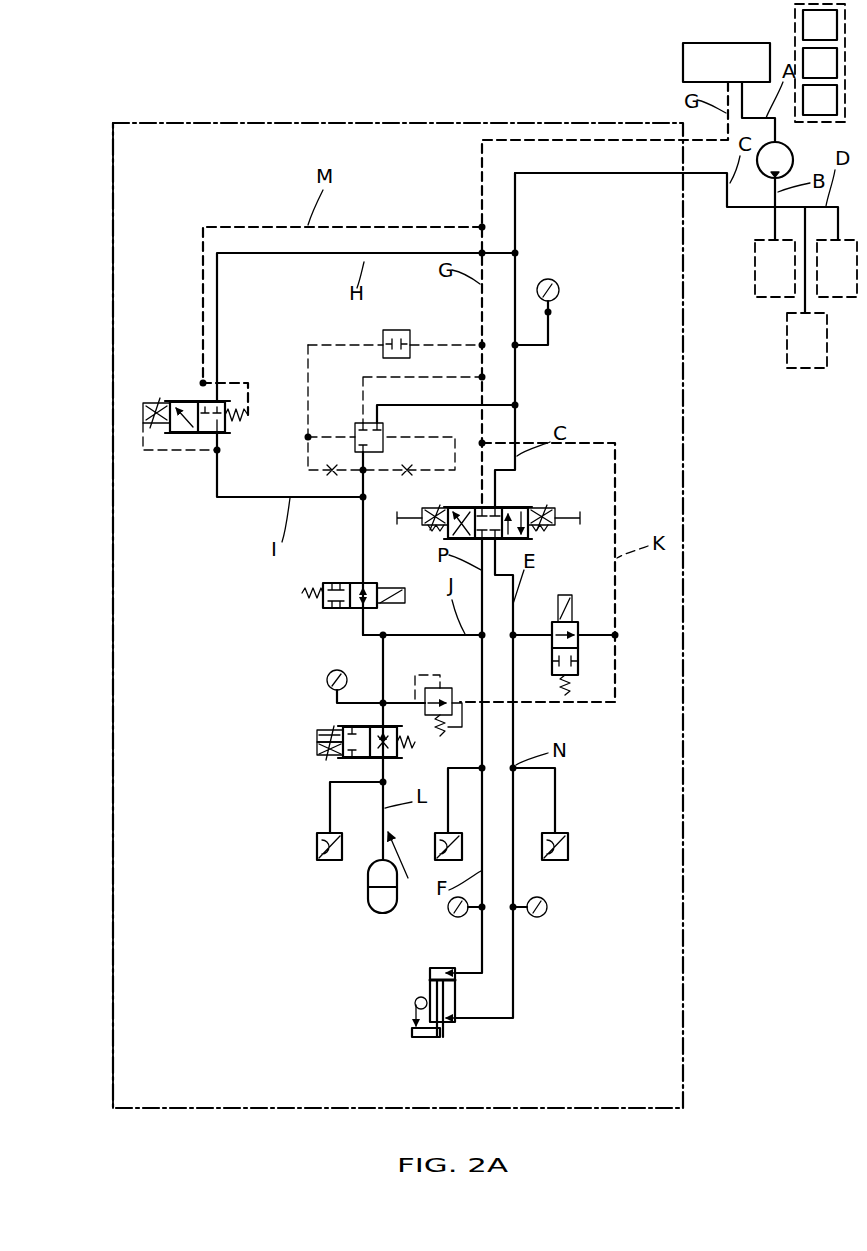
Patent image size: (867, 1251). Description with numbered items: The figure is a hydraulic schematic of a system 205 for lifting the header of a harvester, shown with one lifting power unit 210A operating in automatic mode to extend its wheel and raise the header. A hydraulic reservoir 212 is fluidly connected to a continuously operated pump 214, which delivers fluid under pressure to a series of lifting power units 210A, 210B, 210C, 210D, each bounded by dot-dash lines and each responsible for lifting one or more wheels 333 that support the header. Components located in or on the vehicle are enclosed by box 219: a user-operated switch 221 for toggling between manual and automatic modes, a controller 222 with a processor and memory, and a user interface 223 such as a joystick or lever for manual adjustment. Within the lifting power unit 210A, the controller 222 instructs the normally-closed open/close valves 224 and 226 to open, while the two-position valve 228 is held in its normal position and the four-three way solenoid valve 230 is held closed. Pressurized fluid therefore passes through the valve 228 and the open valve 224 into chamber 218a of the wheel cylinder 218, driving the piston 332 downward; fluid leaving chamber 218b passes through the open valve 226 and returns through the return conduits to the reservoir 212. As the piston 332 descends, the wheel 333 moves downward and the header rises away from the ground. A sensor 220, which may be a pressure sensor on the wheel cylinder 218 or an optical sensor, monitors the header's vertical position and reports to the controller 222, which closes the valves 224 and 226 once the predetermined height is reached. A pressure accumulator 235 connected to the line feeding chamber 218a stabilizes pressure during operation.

The system 205 is at (378, 69).
The lifting power unit 210A is at (113, 187).
The hydraulic reservoir 212 is at (726, 62).
The pump 214 is at (775, 160).
The box 219 is at (795, 36).
The user-operated switch 221 is at (820, 25).
The controller 222 is at (820, 63).
The user interface 223 is at (820, 100).
The lifting power unit 210B is at (775, 268).
The lifting power unit 210C is at (807, 340).
The lifting power unit 210D is at (837, 268).
The two-position valve 228 is at (190, 400).
The 4/3 way solenoid valve 230 is at (516, 505).
The open/close valve 224 is at (322, 604).
The open/close valve 226 is at (580, 632).
The pressure accumulator 235 is at (368, 895).
The wheel cylinder 218 is at (431, 991).
The chamber 218a is at (441, 970).
The chamber 218b is at (456, 1006).
The sensor 220 is at (416, 1005).
The piston 332 is at (456, 981).
The wheel 333 is at (425, 1040).